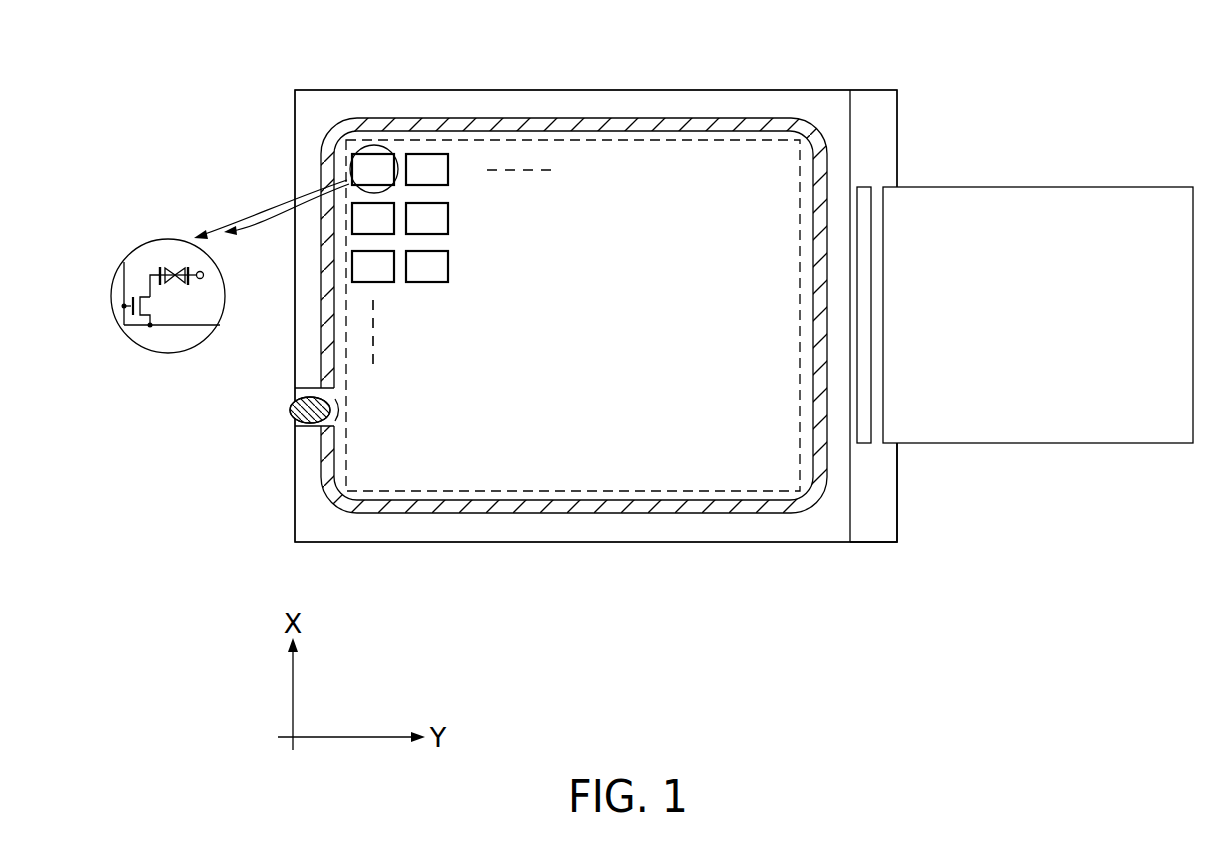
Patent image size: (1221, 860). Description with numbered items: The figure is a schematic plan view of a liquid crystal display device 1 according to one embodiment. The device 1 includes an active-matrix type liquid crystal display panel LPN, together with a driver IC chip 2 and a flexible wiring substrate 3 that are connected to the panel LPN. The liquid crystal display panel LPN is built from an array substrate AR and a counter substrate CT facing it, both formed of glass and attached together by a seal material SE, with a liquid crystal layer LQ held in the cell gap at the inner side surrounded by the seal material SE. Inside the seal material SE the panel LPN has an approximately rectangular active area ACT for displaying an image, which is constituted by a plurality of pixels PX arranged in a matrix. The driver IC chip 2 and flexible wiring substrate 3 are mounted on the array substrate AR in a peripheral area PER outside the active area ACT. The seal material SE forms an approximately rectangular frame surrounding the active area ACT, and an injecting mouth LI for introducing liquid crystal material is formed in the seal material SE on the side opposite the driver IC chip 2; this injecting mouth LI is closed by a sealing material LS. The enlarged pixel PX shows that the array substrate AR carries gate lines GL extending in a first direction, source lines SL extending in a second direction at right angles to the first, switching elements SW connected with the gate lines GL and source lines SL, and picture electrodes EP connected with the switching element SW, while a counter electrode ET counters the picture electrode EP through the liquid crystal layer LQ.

The liquid crystal display device 1 is at (914, 68).
The driver IC chip 2 is at (859, 187).
The flexible wiring substrate 3 is at (1044, 187).
The liquid crystal display panel LPN is at (879, 552).
The counter substrate CT is at (812, 543).
The array substrate AR is at (890, 515).
The seal material SE is at (628, 118).
The active area ACT is at (660, 506).
The peripheral area PER is at (293, 376).
The pixel PX is at (375, 145).
The sealing material LS is at (290, 410).
The injecting mouth LI is at (339, 410).
The gate line GL is at (117, 281).
The source line SL is at (183, 326).
The switching element SW is at (166, 304).
The picture electrode EP is at (159, 266).
The liquid crystal layer LQ is at (177, 267).
The counter electrode ET is at (204, 279).